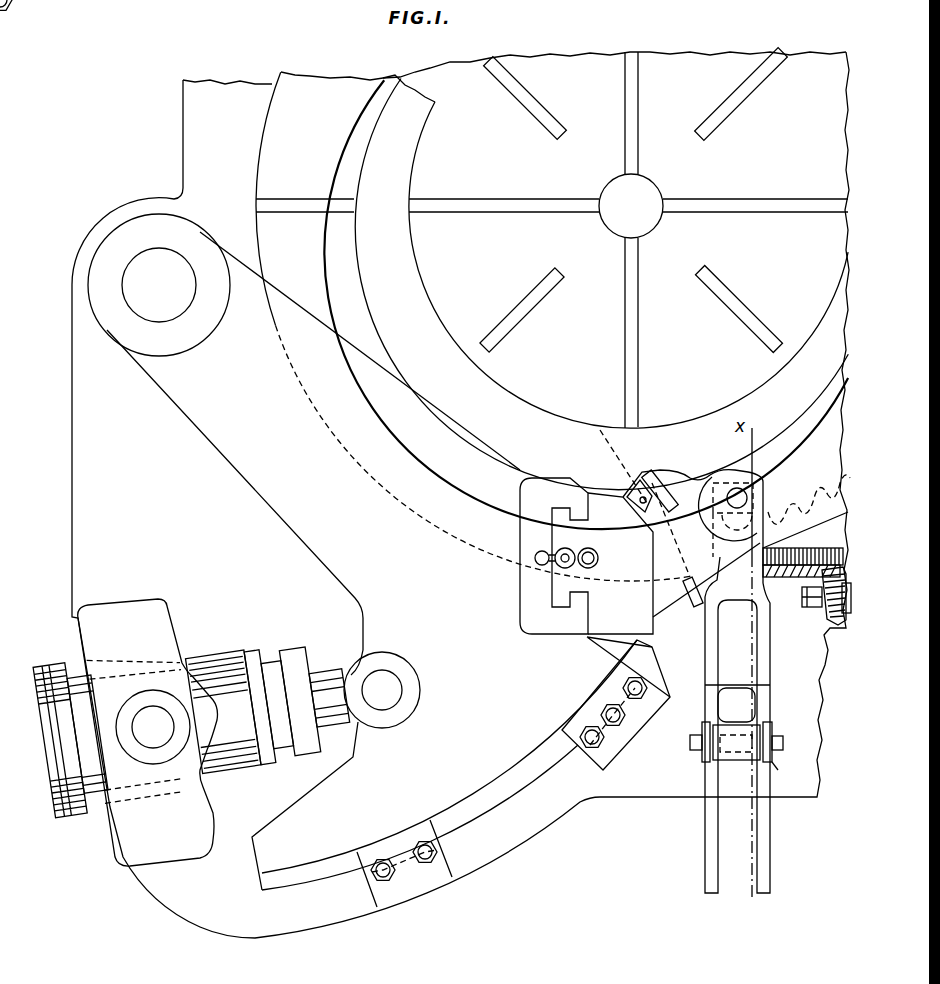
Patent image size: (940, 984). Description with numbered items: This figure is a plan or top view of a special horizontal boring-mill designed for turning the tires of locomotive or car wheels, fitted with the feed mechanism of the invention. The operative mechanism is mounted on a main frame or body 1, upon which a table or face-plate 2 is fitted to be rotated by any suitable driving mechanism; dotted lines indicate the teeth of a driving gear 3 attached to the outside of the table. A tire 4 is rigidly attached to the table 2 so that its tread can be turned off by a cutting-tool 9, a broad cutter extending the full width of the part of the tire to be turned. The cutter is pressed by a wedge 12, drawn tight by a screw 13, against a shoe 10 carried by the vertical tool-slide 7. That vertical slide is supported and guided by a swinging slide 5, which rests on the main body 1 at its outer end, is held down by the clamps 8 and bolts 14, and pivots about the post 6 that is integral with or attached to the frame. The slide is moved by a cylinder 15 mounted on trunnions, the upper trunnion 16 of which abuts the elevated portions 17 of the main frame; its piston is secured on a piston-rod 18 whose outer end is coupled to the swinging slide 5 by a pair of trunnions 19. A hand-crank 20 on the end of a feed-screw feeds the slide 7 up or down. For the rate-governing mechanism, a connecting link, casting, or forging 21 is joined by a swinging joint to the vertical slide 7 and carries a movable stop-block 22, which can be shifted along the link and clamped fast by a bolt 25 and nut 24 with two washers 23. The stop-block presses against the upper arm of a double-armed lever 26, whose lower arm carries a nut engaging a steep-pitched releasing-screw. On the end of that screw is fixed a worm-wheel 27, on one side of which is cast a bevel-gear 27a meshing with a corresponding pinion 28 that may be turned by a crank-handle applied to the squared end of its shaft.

The main frame or body 1 is at (460, 495).
The table or face-plate 2 is at (552, 314).
The spring 3 is at (809, 499).
The tire 4 is at (586, 302).
The swinging slide 5 is at (362, 552).
The post 6 is at (159, 285).
The vertical tool-slide 7 is at (657, 583).
The clamps 8 is at (513, 773).
The cutting-tool 9 is at (647, 472).
The shoe 10 is at (655, 472).
The wedge 12 is at (638, 492).
The screw 13 is at (689, 604).
The bolts 14 is at (645, 683).
The cylinder 15 is at (212, 680).
The upper trunnion 16 is at (153, 727).
The elevated portions of the main frame 17 is at (148, 732).
The piston-rod 18 is at (288, 688).
The trunnions 19 is at (382, 690).
The hand-crank 20 is at (590, 556).
The connecting link 21 is at (776, 849).
The movable stop-block 22 is at (740, 760).
The washers 23 is at (702, 748).
The nut 24 is at (778, 770).
The bolt 25 is at (690, 746).
The double-armed lever 26 is at (736, 692).
The worm-wheel 27 is at (843, 553).
The bevel-gear 27a is at (800, 583).
The pinion 28 is at (822, 618).